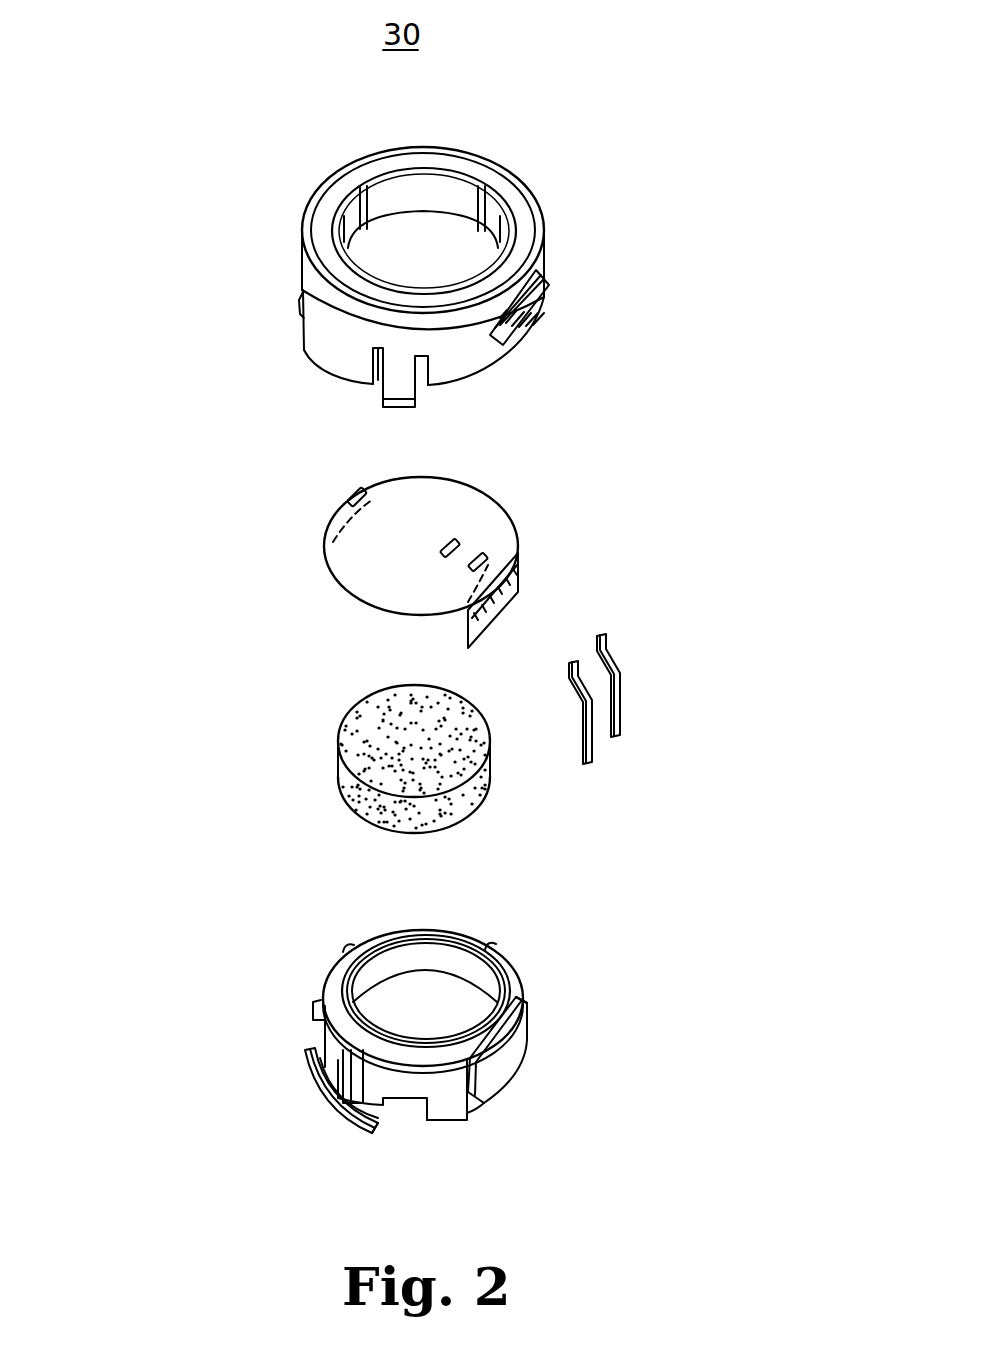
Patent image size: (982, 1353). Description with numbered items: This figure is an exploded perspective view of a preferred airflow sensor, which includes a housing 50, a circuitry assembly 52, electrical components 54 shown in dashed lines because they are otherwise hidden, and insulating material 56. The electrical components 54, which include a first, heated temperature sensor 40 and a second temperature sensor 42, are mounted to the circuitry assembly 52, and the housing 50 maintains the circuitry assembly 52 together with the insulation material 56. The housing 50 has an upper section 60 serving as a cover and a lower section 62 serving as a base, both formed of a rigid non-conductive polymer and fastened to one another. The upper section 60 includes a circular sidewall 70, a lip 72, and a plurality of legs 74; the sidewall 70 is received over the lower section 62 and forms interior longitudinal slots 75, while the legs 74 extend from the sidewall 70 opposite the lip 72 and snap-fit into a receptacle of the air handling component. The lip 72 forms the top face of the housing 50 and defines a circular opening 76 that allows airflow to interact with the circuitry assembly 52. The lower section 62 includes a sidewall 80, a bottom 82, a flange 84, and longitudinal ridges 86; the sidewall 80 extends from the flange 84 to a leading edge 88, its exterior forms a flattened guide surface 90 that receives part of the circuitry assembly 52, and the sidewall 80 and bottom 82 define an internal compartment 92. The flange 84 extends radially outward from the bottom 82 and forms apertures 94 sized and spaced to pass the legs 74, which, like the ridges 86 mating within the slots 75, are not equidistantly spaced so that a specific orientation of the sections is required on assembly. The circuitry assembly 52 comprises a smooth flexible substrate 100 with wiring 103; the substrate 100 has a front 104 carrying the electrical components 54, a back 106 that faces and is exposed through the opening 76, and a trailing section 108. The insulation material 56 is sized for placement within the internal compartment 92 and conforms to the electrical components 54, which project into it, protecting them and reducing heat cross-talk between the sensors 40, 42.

The first temperature sensor 40 is at (452, 611).
The second temperature sensor 42 is at (336, 541).
The housing 50 is at (262, 312).
The circuitry assembly 52 is at (491, 597).
The electrical components 54 is at (405, 498).
The insulating material 56 is at (342, 792).
The upper section 60 is at (429, 248).
The lower section 62 is at (435, 1032).
The sidewall 70 is at (338, 322).
The lip 72 is at (337, 192).
The legs 74 is at (396, 380).
The interior longitudinal slots 75 is at (465, 196).
The opening 76 is at (443, 163).
The sidewall 80 is at (442, 1078).
The bottom 82 is at (456, 1122).
The flange 84 is at (333, 1120).
The longitudinal ridges 86 is at (352, 1072).
The leading edge 88 is at (455, 935).
The flattened guide surface 90 is at (510, 1037).
The internal compartment 92 is at (410, 978).
The apertures 94 is at (525, 1005).
The flexible substrate 100 is at (375, 478).
The wiring 103 is at (622, 697).
The front 104 is at (362, 612).
The back 106 is at (500, 520).
The trailing section 108 is at (497, 605).